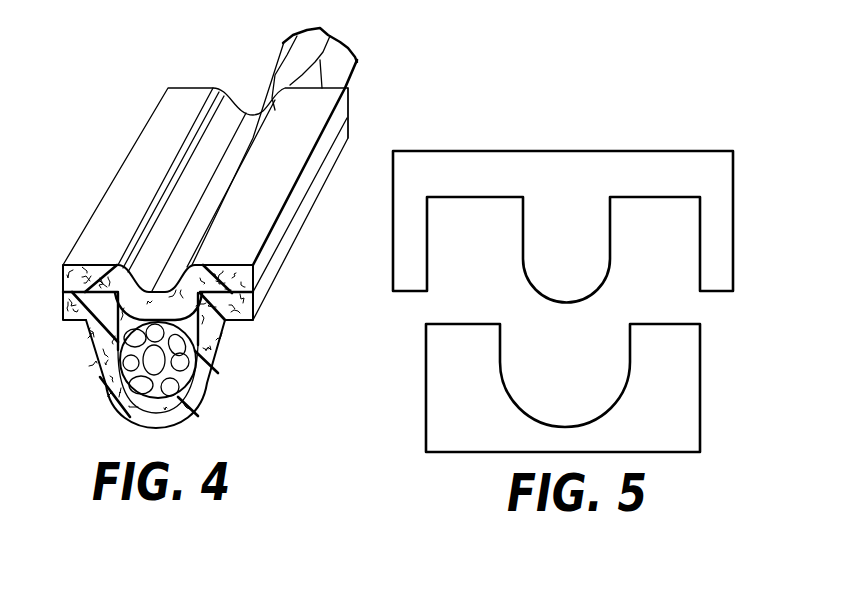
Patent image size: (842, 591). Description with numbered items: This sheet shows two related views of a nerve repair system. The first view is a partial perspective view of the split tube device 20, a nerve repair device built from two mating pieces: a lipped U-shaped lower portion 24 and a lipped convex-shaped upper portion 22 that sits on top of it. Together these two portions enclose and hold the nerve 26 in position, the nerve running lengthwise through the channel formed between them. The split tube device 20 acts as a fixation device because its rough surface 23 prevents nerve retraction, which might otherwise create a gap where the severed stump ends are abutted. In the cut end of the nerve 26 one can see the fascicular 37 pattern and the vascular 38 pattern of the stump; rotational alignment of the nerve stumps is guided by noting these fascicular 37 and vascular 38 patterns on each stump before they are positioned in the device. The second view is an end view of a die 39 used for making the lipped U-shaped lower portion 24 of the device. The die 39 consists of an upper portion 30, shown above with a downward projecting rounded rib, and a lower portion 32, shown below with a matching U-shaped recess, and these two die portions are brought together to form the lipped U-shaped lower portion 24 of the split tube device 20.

In FIG. 4, the split tube device 20 is at (103, 160).
In FIG. 4, the lipped convex-shaped upper portion 22 is at (292, 195).
In FIG. 4, the rough surface 23 is at (128, 343).
In FIG. 4, the lipped U-shaped lower portion 24 is at (218, 373).
In FIG. 4, the nerve 26 is at (358, 62).
In FIG. 5, the upper portion of die 30 is at (703, 155).
In FIG. 5, the lower portion of die 32 is at (687, 397).
In FIG. 4, the fascicular pattern 37 is at (128, 386).
In FIG. 4, the vascular pattern 38 is at (302, 53).
In FIG. 5, the die 39 is at (634, 128).